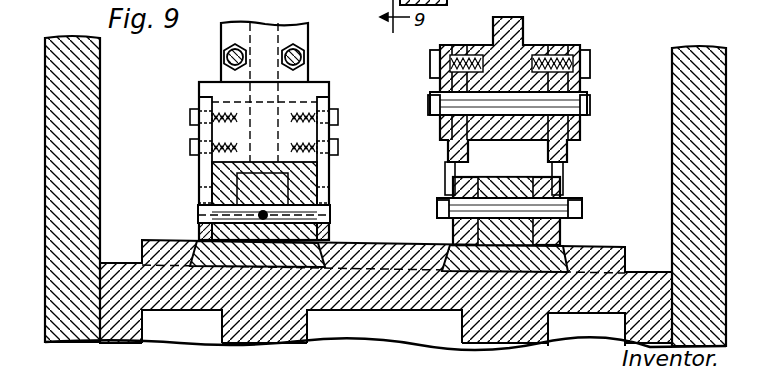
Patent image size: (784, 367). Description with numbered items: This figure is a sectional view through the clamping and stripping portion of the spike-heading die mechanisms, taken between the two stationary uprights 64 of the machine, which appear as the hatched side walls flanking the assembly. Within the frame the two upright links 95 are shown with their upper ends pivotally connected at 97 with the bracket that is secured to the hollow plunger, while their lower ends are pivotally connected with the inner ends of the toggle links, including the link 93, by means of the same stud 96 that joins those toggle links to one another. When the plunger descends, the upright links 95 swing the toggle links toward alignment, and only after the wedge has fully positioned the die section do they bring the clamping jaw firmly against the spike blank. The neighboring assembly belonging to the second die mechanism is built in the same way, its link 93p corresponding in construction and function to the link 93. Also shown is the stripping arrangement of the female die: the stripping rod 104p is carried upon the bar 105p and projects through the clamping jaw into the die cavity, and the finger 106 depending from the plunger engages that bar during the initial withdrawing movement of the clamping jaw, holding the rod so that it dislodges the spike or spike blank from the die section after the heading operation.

The stationary upright 64 is at (100, 70).
The finger 106 is at (309, 99).
The link 93p is at (278, 120).
The bar 105p is at (330, 211).
The stripping rod 104p is at (197, 213).
The pivotal connection 97 is at (590, 106).
The upright links 95 is at (451, 168).
The link 93 is at (503, 186).
The stud 96 is at (584, 211).